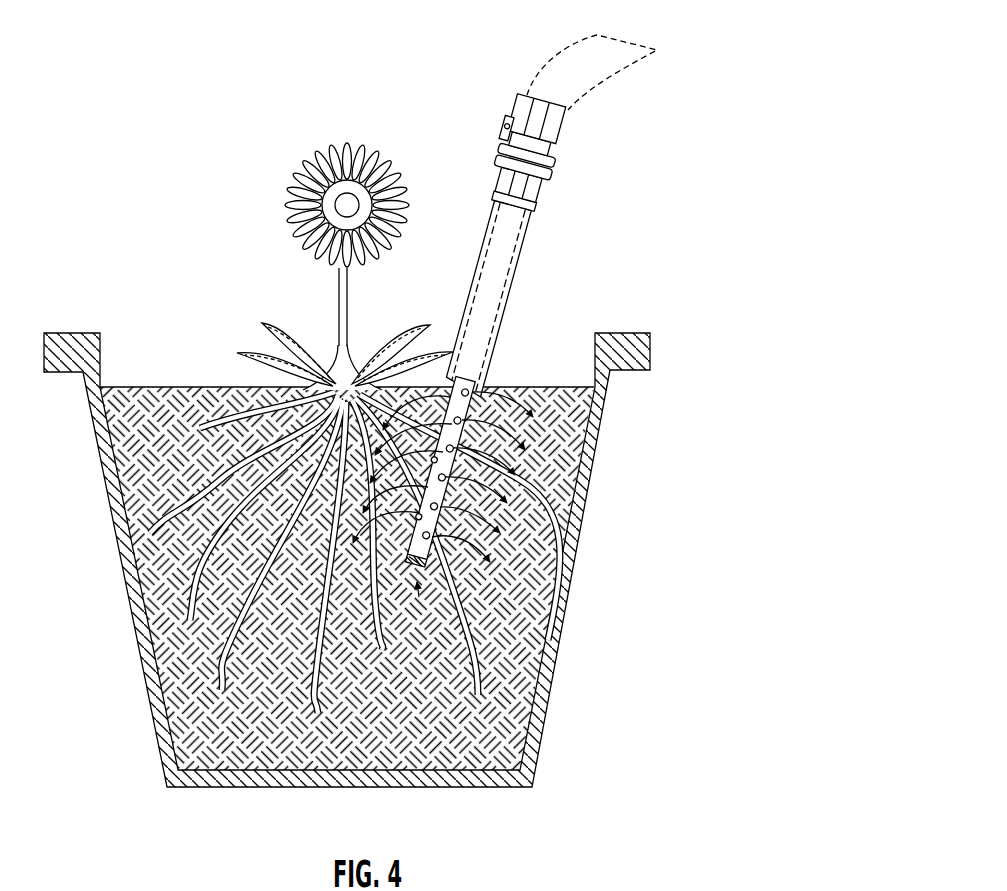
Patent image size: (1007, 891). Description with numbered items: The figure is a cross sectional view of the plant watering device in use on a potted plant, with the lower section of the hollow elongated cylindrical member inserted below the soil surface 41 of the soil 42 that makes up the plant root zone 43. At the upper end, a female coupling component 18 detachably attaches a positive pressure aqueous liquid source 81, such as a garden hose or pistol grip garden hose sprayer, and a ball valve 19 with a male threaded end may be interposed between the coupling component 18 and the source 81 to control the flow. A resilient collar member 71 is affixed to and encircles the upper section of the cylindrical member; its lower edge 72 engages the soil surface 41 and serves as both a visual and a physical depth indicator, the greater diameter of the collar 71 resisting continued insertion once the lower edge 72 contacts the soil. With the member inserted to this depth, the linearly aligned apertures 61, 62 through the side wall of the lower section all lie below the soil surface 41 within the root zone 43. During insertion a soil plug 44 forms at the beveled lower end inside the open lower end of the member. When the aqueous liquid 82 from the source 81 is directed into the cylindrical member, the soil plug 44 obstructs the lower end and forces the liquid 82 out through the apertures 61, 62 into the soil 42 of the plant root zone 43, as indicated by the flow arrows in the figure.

The female coupling component 18 is at (543, 196).
The ball valve 19 is at (567, 125).
The soil surface 41 is at (191, 383).
The soil 42 is at (465, 722).
The plant root zone 43 is at (232, 568).
The soil plug 44 is at (465, 635).
The linearly aligned aperture 61 is at (486, 449).
The linearly aligned aperture 62 is at (455, 385).
The resilient collar member 71 is at (485, 238).
The lower edge 72 is at (345, 365).
The positive pressure aqueous liquid source 81 is at (566, 55).
The aqueous liquid 82 is at (549, 410).